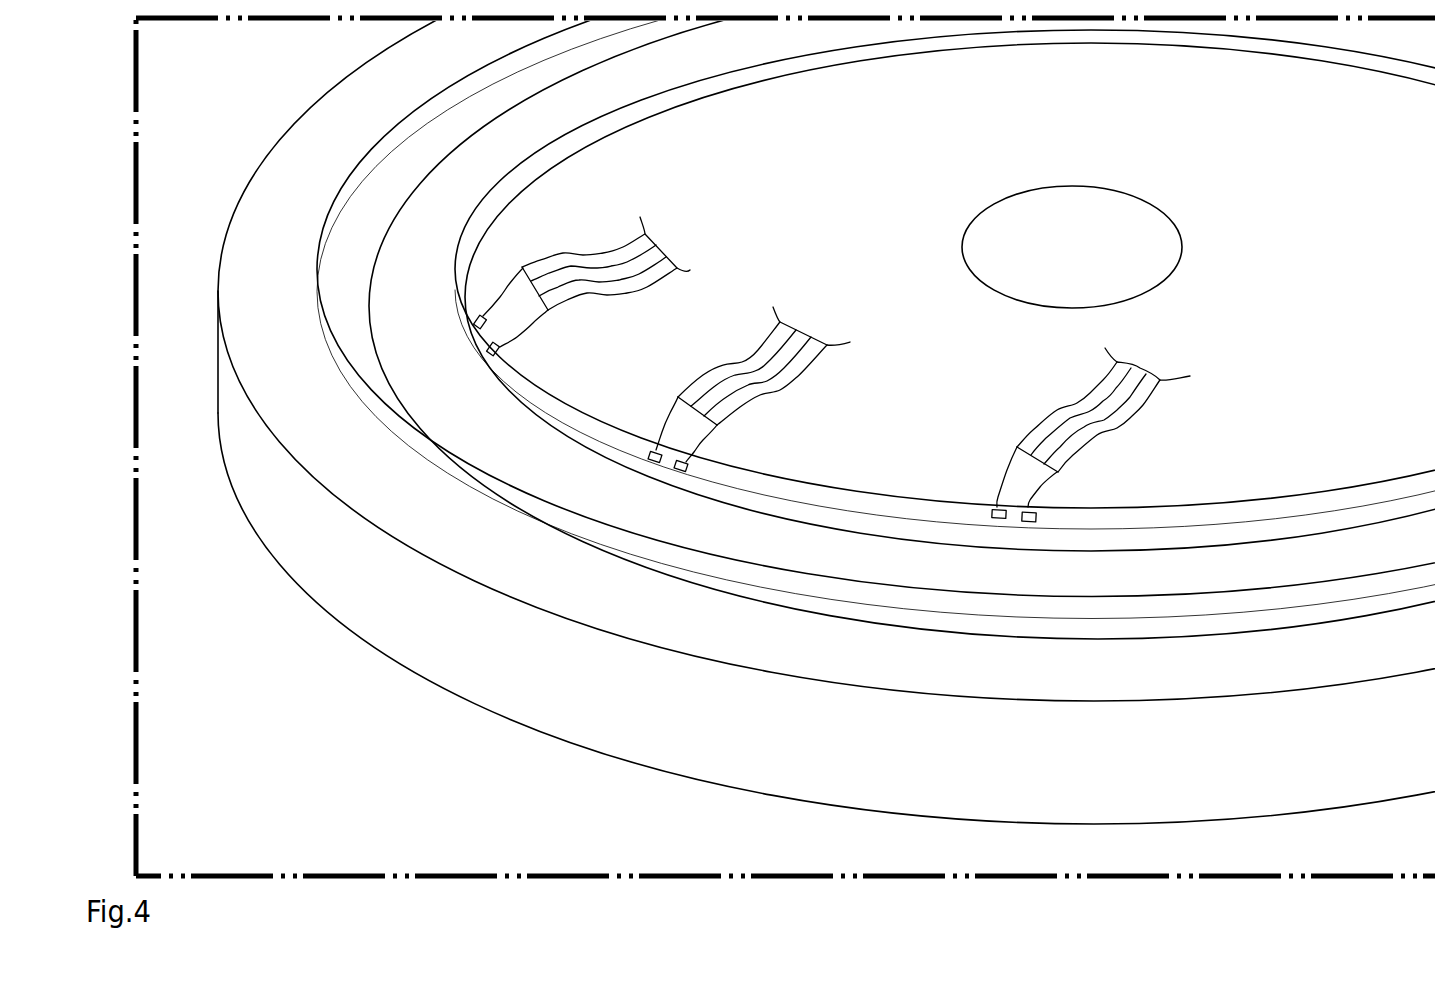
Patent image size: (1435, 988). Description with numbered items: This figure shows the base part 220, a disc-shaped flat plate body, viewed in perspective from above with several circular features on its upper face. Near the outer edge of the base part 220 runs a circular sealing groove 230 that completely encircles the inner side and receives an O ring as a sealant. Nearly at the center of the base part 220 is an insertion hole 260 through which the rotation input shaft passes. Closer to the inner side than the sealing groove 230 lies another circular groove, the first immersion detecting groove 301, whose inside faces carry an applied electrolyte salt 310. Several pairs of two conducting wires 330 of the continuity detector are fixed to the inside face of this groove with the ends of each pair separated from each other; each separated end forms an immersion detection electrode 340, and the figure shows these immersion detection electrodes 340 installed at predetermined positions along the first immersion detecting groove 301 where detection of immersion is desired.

The base part 220 is at (297, 170).
The sealing groove 230 is at (363, 181).
The insertion hole 260 is at (1150, 198).
The first immersion detecting groove 301 is at (851, 504).
The electrolyte salt 310 is at (563, 414).
The conducting wires 330 is at (648, 250).
The immersion detection electrode 340 is at (482, 318).